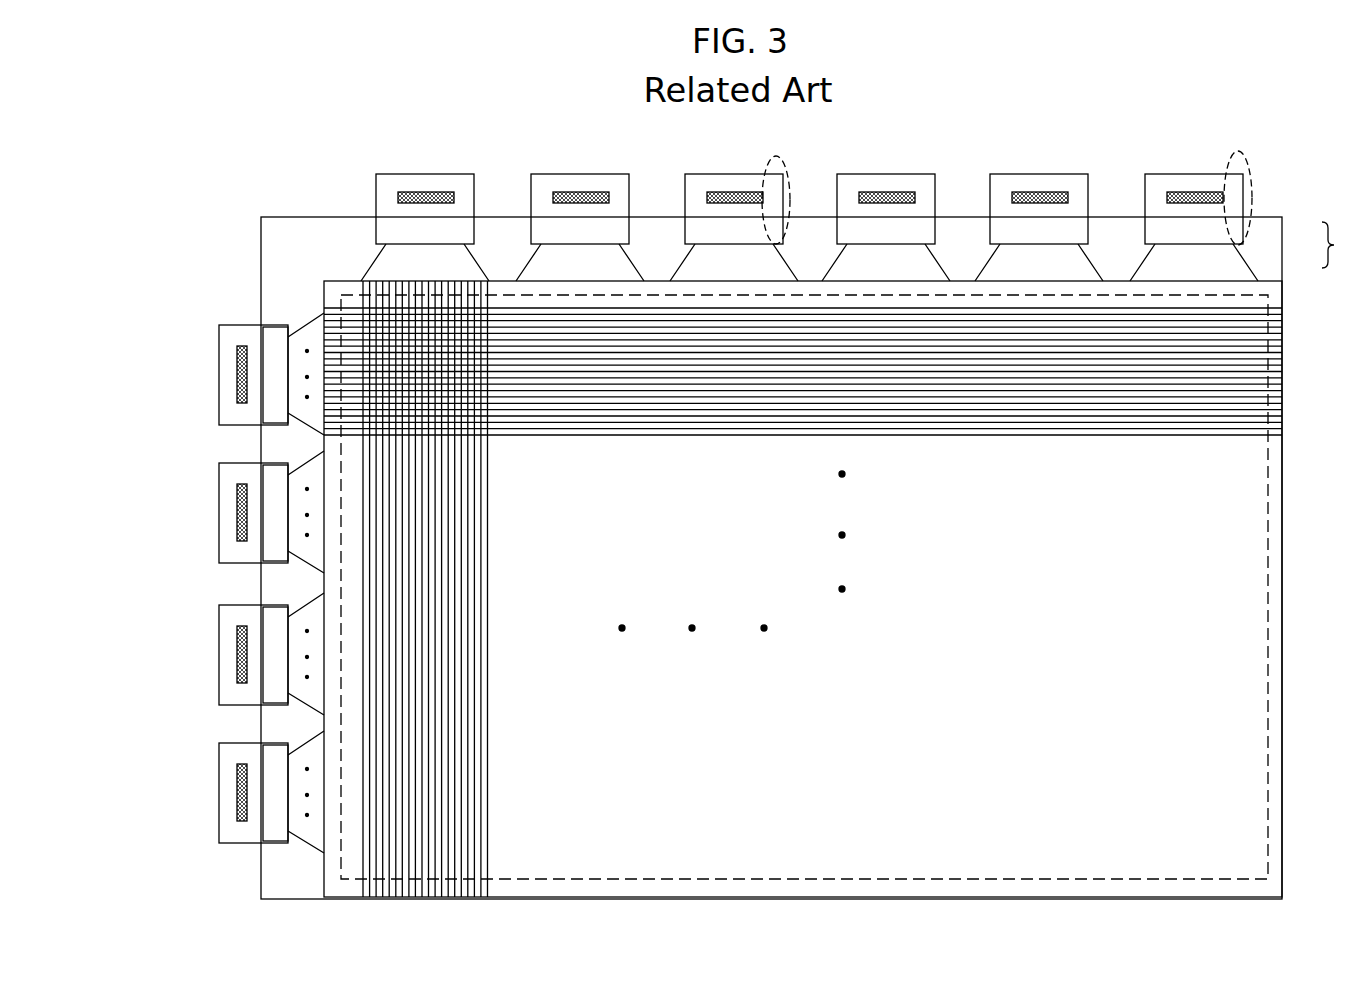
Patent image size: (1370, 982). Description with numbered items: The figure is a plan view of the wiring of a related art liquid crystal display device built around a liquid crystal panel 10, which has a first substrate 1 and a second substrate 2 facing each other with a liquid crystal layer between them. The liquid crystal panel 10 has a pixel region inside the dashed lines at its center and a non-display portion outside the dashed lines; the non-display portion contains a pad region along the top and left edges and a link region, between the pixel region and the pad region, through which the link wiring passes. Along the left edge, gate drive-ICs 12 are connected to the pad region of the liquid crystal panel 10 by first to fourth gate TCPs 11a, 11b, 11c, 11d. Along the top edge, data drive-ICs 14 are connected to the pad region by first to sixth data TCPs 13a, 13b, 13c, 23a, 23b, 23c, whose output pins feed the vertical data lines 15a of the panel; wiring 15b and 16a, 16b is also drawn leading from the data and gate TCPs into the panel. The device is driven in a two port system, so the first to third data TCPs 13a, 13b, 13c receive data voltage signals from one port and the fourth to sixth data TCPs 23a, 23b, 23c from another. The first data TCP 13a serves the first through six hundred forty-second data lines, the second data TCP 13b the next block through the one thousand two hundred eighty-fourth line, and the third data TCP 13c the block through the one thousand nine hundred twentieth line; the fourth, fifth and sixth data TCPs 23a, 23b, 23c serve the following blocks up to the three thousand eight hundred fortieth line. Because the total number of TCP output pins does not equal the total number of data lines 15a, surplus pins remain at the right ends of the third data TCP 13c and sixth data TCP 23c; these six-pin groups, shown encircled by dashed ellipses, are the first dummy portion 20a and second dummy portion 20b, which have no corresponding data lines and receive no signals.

The first substrate 1 is at (1270, 272).
The second substrate 2 is at (1282, 228).
The liquid crystal panel 10 is at (1342, 245).
The first gate TCP 11a is at (228, 342).
The second gate TCP 11b is at (228, 508).
The third gate TCP 11c is at (228, 656).
The fourth gate TCP 11d is at (228, 794).
The gate drive-IC 12 is at (237, 374).
The first data TCP 13a is at (414, 186).
The second data TCP 13b is at (567, 184).
The third data TCP 13c is at (720, 184).
The data drive-IC 14 is at (432, 196).
The data lines 15a is at (360, 300).
The address electrode connection lines 15b is at (378, 252).
The scan electrode lines 16a is at (360, 308).
The scan electrode connection lines 16b is at (307, 325).
The first dummy portion 20a is at (776, 157).
The second dummy portion 20b is at (1238, 151).
The fourth data TCP 23a is at (888, 184).
The fifth data TCP 23b is at (1041, 184).
The sixth data TCP 23c is at (1171, 184).